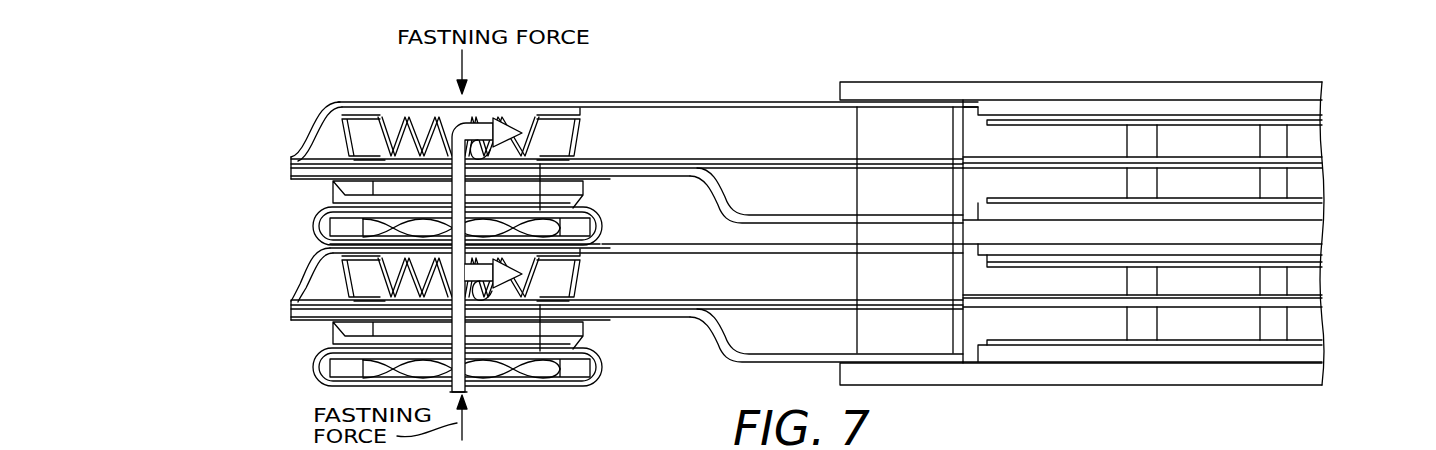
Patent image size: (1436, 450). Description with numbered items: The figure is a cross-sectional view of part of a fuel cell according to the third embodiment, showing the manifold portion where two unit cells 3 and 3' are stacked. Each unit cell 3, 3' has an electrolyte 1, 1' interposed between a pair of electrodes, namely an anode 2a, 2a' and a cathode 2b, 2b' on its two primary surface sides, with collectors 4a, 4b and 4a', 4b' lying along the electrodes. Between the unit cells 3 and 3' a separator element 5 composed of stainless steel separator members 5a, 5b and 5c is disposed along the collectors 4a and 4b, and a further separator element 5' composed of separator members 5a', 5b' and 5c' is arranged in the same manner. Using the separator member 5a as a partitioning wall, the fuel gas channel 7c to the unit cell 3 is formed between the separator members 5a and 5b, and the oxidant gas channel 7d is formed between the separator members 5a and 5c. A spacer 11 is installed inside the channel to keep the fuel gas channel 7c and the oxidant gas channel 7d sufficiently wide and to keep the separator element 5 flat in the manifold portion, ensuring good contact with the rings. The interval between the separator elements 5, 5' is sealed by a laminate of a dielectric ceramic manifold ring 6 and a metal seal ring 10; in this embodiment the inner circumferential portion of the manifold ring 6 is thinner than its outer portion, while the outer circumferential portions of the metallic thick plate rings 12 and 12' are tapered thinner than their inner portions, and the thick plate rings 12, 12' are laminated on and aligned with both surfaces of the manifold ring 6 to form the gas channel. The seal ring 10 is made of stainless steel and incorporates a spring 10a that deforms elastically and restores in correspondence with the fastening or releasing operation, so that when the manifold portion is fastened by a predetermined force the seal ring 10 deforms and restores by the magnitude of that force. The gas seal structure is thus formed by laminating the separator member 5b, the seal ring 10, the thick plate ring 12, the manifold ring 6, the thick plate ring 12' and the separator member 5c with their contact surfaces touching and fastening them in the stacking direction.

The electrolyte 1 is at (1168, 247).
The electrolyte 1' is at (1109, 243).
The anode 2a is at (1180, 267).
The cathode 2b is at (1172, 220).
The anode 2a' is at (1175, 103).
The cathode 2b' is at (1175, 372).
The unit cell 3 is at (1194, 255).
The unit cell 3' is at (1198, 241).
The collector 4a is at (1183, 291).
The collector 4b is at (1183, 186).
The collector 4a' is at (1187, 142).
The collector 4b' is at (1187, 336).
The separator element 5 is at (231, 136).
The separator member 5a is at (590, 143).
The separator member 5b is at (597, 124).
The separator member 5c is at (590, 178).
The separator element 5' is at (362, 336).
The separator member 5a' is at (564, 345).
The separator member 5b' is at (564, 301).
The separator member 5c' is at (564, 368).
The manifold ring 6 is at (330, 193).
The fuel gas channel 7c is at (638, 135).
The oxidant gas channel 7d is at (735, 187).
The seal ring 10 is at (313, 244).
The spring 10a is at (330, 252).
The spacer 11 is at (365, 133).
The thick plate ring 12 is at (443, 285).
The thick plate ring 12' is at (485, 287).